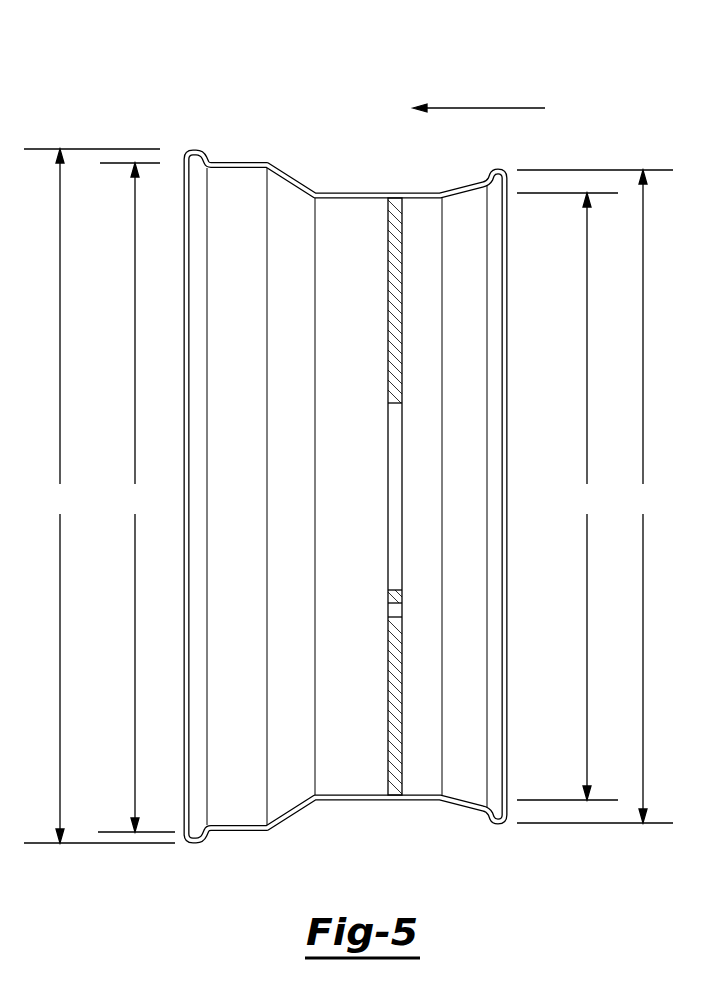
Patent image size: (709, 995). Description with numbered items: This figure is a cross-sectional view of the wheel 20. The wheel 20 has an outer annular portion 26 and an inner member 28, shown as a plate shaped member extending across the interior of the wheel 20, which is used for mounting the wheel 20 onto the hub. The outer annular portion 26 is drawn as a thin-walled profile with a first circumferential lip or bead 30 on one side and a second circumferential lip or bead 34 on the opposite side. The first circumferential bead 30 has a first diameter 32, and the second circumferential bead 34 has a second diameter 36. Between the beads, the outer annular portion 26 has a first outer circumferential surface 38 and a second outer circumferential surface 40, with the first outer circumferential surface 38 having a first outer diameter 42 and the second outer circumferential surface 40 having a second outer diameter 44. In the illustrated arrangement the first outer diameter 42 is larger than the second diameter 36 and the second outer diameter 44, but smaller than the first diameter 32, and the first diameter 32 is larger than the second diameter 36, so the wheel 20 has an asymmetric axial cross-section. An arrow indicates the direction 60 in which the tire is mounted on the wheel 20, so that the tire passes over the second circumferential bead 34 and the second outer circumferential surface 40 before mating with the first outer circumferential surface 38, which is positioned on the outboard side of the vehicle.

The wheel 20 is at (179, 117).
The outer annular portion 26 is at (254, 856).
The inner member 28 is at (390, 346).
The first circumferential bead 30 is at (193, 845).
The first diameter 32 is at (99, 496).
The second circumferential bead 34 is at (497, 827).
The second diameter 36 is at (595, 496).
The first outer circumferential surface 38 is at (229, 150).
The second outer circumferential surface 40 is at (377, 179).
The first outer diameter 42 is at (136, 497).
The second outer diameter 44 is at (567, 496).
The direction 60 is at (480, 108).